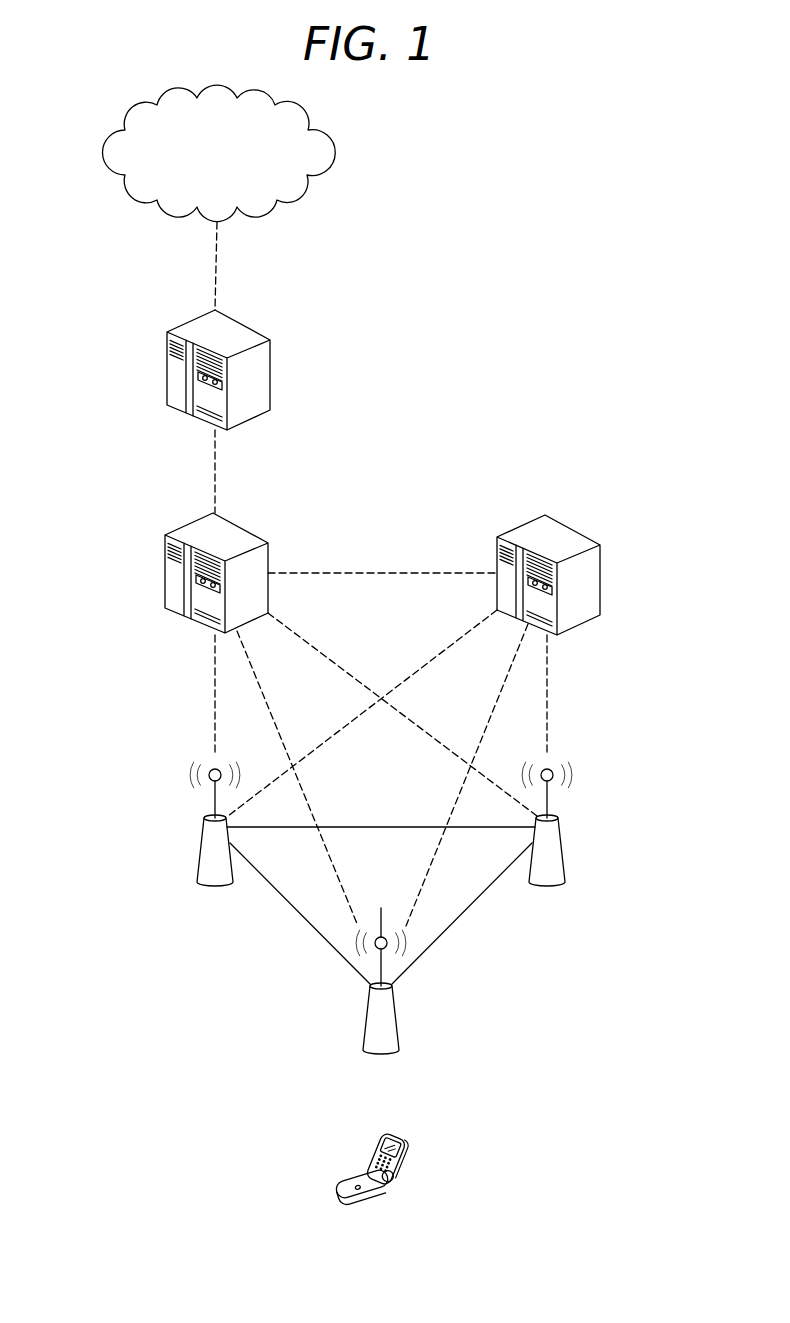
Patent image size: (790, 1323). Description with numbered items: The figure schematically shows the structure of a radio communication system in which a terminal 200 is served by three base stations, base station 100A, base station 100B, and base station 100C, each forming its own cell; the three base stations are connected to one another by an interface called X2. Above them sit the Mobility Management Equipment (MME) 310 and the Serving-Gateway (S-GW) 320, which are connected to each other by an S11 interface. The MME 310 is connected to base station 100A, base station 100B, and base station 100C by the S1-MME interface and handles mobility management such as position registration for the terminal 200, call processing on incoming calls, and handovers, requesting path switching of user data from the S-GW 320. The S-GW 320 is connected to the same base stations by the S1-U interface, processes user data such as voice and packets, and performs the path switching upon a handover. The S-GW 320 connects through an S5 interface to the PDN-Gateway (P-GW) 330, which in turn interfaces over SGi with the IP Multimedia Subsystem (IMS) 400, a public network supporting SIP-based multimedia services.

The IP Multimedia Subsystem (IMS) 400 is at (128, 118).
The PDN-Gateway (P-GW) 330 is at (270, 353).
The Serving-Gateway (S-GW) 320 is at (165, 574).
The Mobility Management Equipment (MME) 310 is at (598, 575).
The base station 100A is at (202, 846).
The base station 100B is at (397, 1018).
The base station 100C is at (560, 846).
The terminal 200 is at (375, 1158).